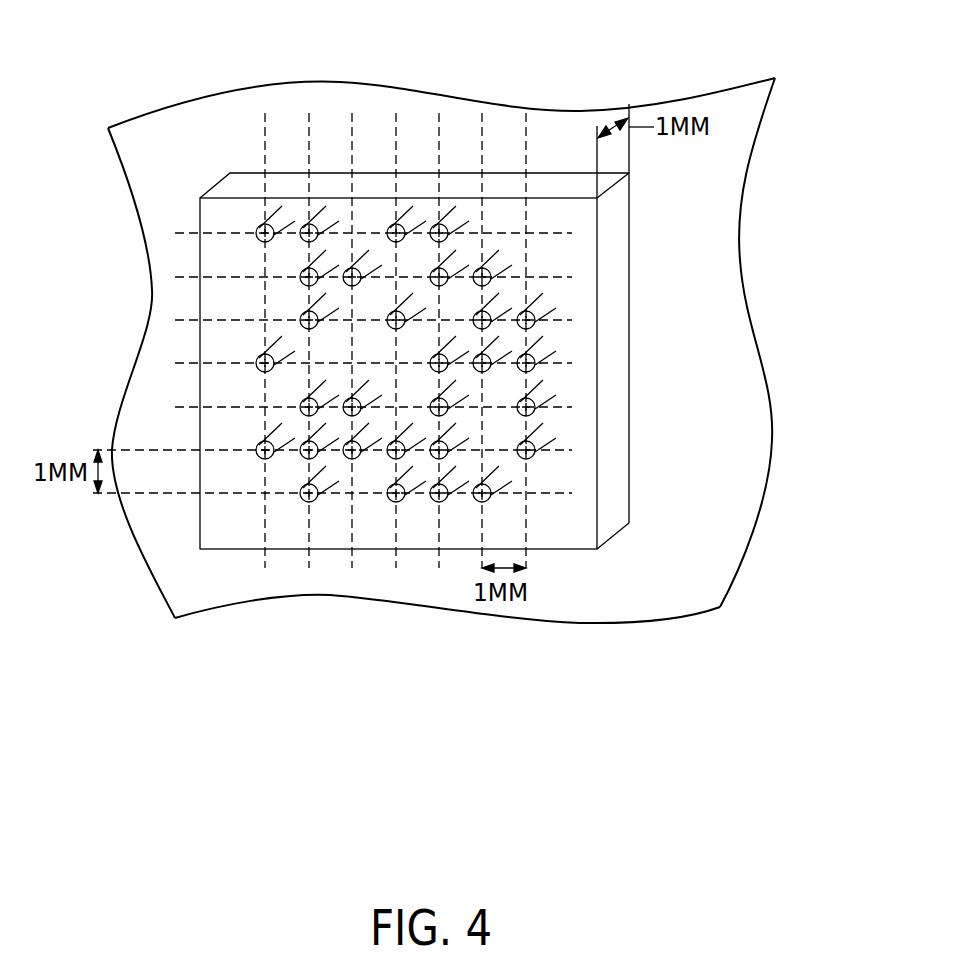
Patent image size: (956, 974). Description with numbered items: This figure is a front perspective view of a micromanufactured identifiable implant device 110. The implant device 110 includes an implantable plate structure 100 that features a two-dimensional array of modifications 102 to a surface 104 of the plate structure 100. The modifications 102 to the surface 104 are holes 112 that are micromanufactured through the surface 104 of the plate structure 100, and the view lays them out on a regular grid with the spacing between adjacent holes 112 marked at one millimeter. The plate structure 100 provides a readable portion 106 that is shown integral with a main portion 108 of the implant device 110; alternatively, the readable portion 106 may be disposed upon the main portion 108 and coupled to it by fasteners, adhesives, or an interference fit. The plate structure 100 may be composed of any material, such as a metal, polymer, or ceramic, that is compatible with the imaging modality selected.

The implantable plate structure 100 is at (688, 209).
The modifications 102 is at (446, 238).
The surface 104 is at (386, 213).
The readable portion 106 is at (645, 392).
The main portion 108 is at (703, 557).
The implant device 110 is at (778, 283).
The holes 112 is at (476, 269).